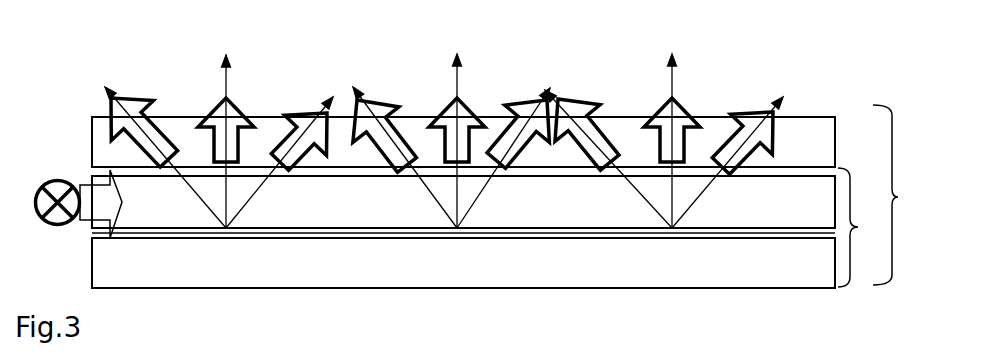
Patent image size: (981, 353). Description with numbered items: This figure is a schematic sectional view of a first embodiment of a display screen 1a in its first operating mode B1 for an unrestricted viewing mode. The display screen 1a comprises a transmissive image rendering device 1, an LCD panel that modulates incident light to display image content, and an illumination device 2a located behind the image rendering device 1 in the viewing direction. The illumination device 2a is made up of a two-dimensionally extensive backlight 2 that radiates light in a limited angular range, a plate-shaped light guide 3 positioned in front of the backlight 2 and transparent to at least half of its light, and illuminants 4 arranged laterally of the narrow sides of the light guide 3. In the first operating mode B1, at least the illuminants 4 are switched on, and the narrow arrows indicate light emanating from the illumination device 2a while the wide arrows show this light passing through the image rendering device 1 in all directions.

The transmissive image rendering device 1 is at (463, 142).
The plate-shaped light guide 3 is at (463, 204).
The backlight 2 is at (463, 263).
The illuminants 4 is at (57, 176).
The display screen 1a is at (903, 195).
The illumination device 2a is at (865, 227).
The first operating mode B1 is at (444, 114).